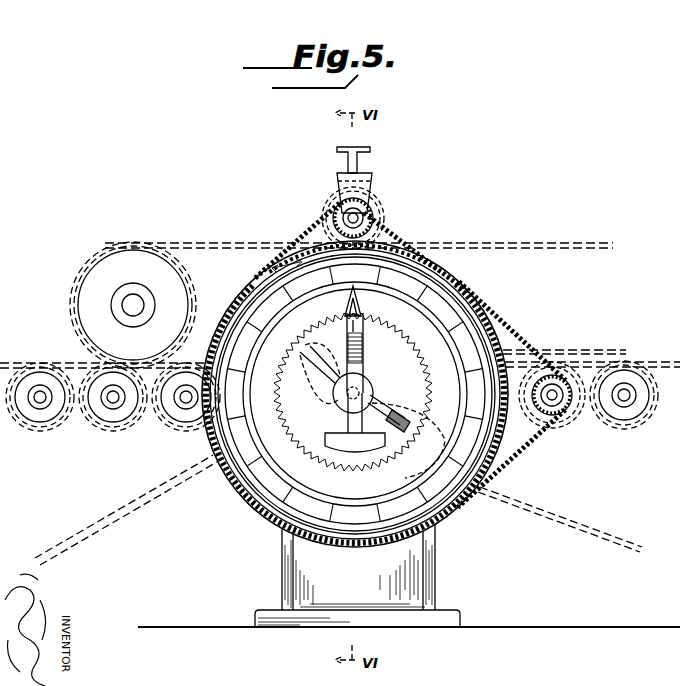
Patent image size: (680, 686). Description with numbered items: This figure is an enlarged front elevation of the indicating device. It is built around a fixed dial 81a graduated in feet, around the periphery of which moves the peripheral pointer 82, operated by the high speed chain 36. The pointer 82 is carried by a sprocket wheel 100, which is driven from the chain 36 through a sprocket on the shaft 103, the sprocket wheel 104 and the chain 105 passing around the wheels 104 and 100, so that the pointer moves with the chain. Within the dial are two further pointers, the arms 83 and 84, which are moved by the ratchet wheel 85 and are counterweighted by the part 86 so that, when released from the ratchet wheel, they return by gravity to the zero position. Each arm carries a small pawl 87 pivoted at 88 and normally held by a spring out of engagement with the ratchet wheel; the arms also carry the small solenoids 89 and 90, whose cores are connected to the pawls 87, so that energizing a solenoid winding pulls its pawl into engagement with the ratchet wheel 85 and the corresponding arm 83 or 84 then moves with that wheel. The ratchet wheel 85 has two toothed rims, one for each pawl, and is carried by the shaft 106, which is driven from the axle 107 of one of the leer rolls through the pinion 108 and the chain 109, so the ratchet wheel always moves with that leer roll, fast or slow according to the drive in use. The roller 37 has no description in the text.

The high speed chain 36 is at (570, 243).
The belt roller 37 is at (105, 273).
The fixed dial 81a is at (267, 270).
The peripheral pointer 82 is at (305, 248).
The pointer arm 83 is at (364, 375).
The pointer arm 84 is at (384, 408).
The ratchet wheel 85 is at (258, 463).
The counterweight 86 is at (338, 433).
The pawl 87 is at (365, 303).
The pawl pivot 88 is at (347, 302).
The solenoid 89 is at (365, 355).
The solenoid 90 is at (420, 399).
The sprocket wheel 100 is at (395, 253).
The shaft 103 is at (365, 208).
The sprocket wheel 104 is at (378, 219).
The chain 105 is at (400, 238).
The shaft 106 is at (305, 368).
The axle 107 is at (553, 402).
The pinion 108 is at (556, 401).
The chain 109 is at (528, 428).